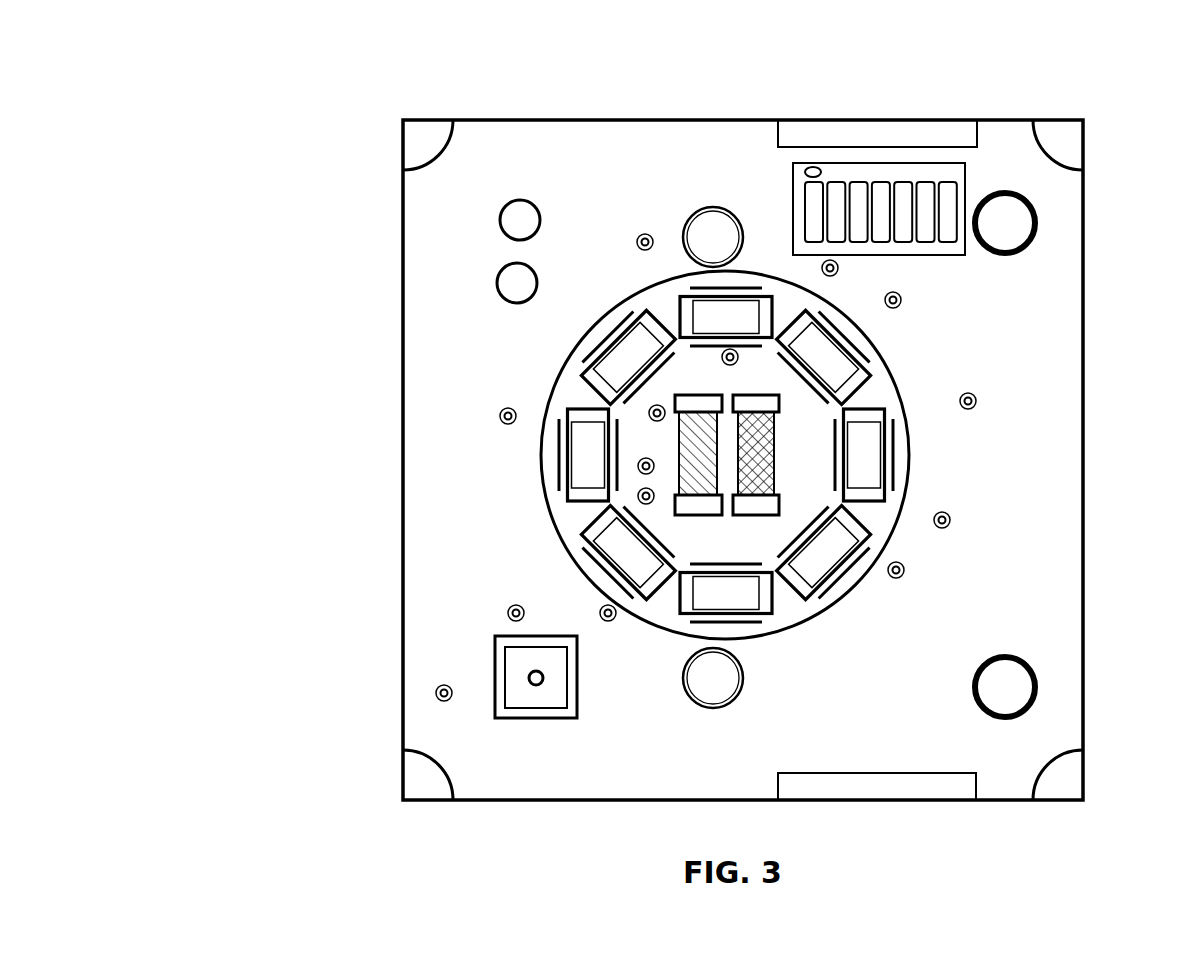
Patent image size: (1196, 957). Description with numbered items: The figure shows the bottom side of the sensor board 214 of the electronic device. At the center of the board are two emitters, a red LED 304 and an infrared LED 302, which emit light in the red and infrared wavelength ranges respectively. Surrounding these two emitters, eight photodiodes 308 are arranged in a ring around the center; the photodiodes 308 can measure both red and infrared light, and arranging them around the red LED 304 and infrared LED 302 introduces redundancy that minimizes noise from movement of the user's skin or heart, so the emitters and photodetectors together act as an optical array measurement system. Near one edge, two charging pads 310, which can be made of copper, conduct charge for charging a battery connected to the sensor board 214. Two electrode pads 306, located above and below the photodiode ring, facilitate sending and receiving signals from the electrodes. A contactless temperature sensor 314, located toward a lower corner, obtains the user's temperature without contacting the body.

The sensor board 214 is at (268, 74).
The infrared LED 302 is at (770, 458).
The red LED 304 is at (693, 458).
The electrode pads 306 is at (712, 207).
The photodiodes 308 is at (830, 360).
The charging pads 310 is at (500, 220).
The temperature sensor 314 is at (495, 658).